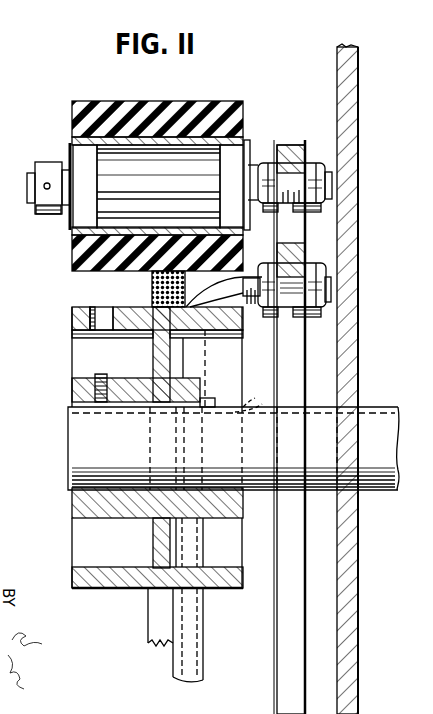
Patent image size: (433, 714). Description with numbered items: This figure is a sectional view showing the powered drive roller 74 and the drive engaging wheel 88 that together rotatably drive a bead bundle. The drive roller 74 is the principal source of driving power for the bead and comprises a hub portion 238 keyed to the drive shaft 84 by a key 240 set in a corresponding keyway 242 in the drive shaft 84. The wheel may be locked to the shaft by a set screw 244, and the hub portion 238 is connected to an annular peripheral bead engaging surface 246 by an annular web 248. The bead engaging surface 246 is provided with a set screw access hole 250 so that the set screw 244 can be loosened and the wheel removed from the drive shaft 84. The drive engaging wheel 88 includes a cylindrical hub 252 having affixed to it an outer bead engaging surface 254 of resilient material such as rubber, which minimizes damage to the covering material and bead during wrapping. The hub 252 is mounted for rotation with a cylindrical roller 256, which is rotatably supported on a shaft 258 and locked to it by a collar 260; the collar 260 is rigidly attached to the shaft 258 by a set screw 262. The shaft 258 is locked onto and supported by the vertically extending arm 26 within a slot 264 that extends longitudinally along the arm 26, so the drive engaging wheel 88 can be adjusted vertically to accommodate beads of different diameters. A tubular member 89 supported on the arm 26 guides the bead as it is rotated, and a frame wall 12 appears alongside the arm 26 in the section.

The drive engaging wheel 88 is at (156, 169).
The outer bead engaging surface 254 is at (165, 122).
The cylindrical roller 256 is at (196, 183).
The cylindrical hub 252 is at (132, 233).
The set screw 262 is at (48, 183).
The collar 260 is at (47, 216).
The shaft 258 is at (258, 176).
The slot 264 is at (298, 226).
The annular peripheral bead engaging surface 246 is at (135, 312).
The set screw access hole 250 is at (95, 322).
The set screw 244 is at (100, 380).
The key 240 is at (210, 397).
The keyway 242 is at (243, 408).
The frame wall 12 is at (352, 378).
The drive shaft 84 is at (382, 415).
The hub portion 238 is at (80, 498).
The annular web 248 is at (156, 545).
The drive roller 74 is at (132, 563).
The tubular member 89 is at (198, 646).
The arm 26 is at (274, 698).